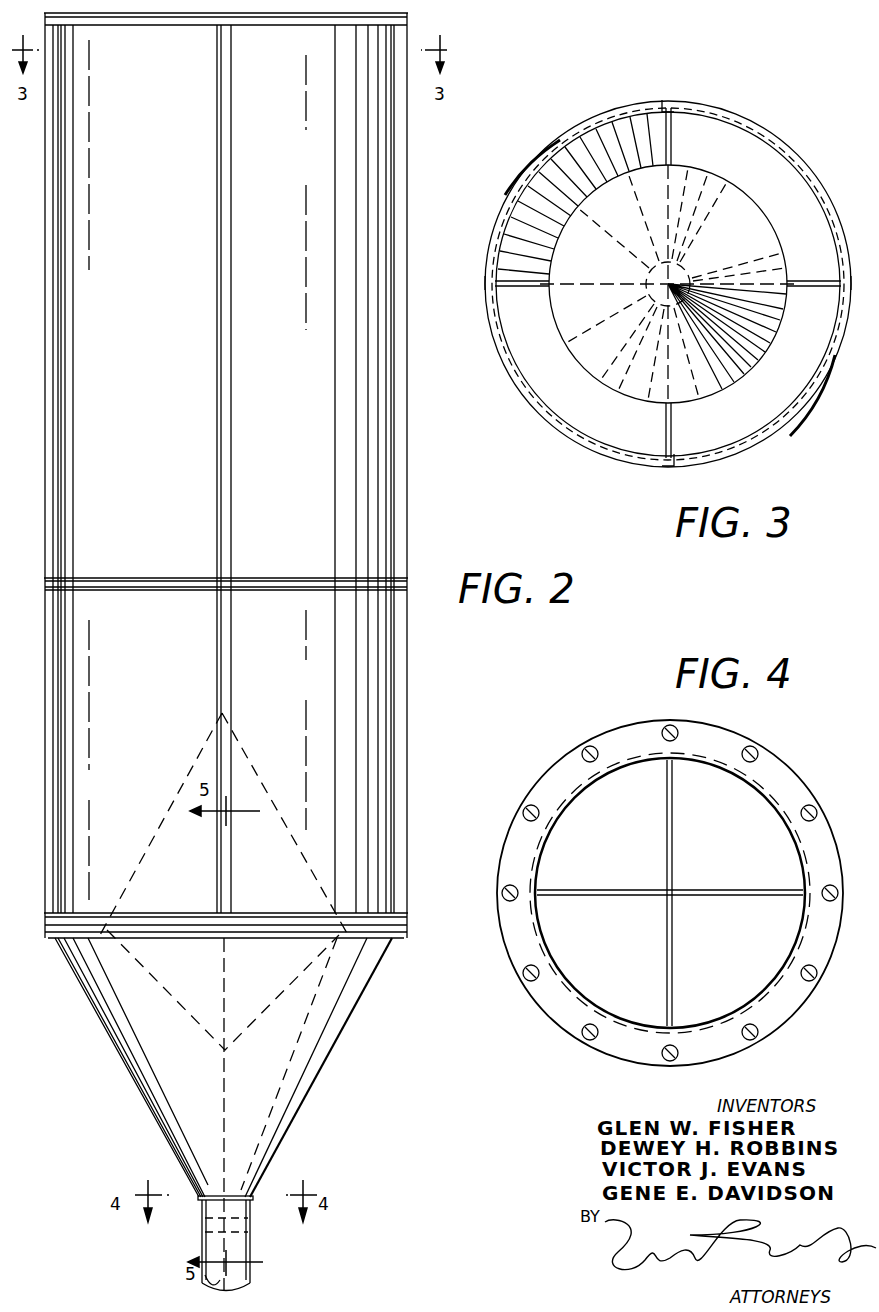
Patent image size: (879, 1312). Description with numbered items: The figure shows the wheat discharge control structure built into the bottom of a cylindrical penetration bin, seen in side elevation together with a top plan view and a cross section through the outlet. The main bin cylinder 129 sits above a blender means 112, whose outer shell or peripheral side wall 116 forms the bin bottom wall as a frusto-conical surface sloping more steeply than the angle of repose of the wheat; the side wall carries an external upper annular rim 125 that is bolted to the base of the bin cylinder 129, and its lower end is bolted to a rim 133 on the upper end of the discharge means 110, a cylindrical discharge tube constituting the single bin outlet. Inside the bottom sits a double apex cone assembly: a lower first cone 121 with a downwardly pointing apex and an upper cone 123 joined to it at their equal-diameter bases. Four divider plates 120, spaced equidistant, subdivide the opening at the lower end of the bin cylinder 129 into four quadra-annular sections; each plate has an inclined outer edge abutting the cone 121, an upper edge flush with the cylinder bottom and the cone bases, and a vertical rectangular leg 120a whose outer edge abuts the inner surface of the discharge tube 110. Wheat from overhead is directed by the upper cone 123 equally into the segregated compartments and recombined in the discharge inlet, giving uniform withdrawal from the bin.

In FIG. 3, the discharge means 110 is at (690, 264).
In FIG. 2, the blender means 112 is at (333, 1064).
In FIG. 2, the peripheral side wall 116 is at (340, 1022).
In FIG. 3, the peripheral side wall 116 is at (764, 125).
In FIG. 3, the divider plate 120 is at (665, 128).
In FIG. 2, the vertical rectangular leg 120a is at (205, 1228).
In FIG. 4, the vertical rectangular leg 120a is at (645, 830).
In FIG. 2, the first cone 121 is at (200, 1026).
In FIG. 2, the upper cone 123 is at (247, 750).
In FIG. 3, the upper cone 123 is at (720, 195).
In FIG. 3, the external upper annular rim 125 is at (566, 137).
In FIG. 2, the main bin cylinder 129 is at (176, 436).
In FIG. 3, the main bin cylinder 129 is at (707, 115).
In FIG. 4, the rim 133 is at (530, 792).